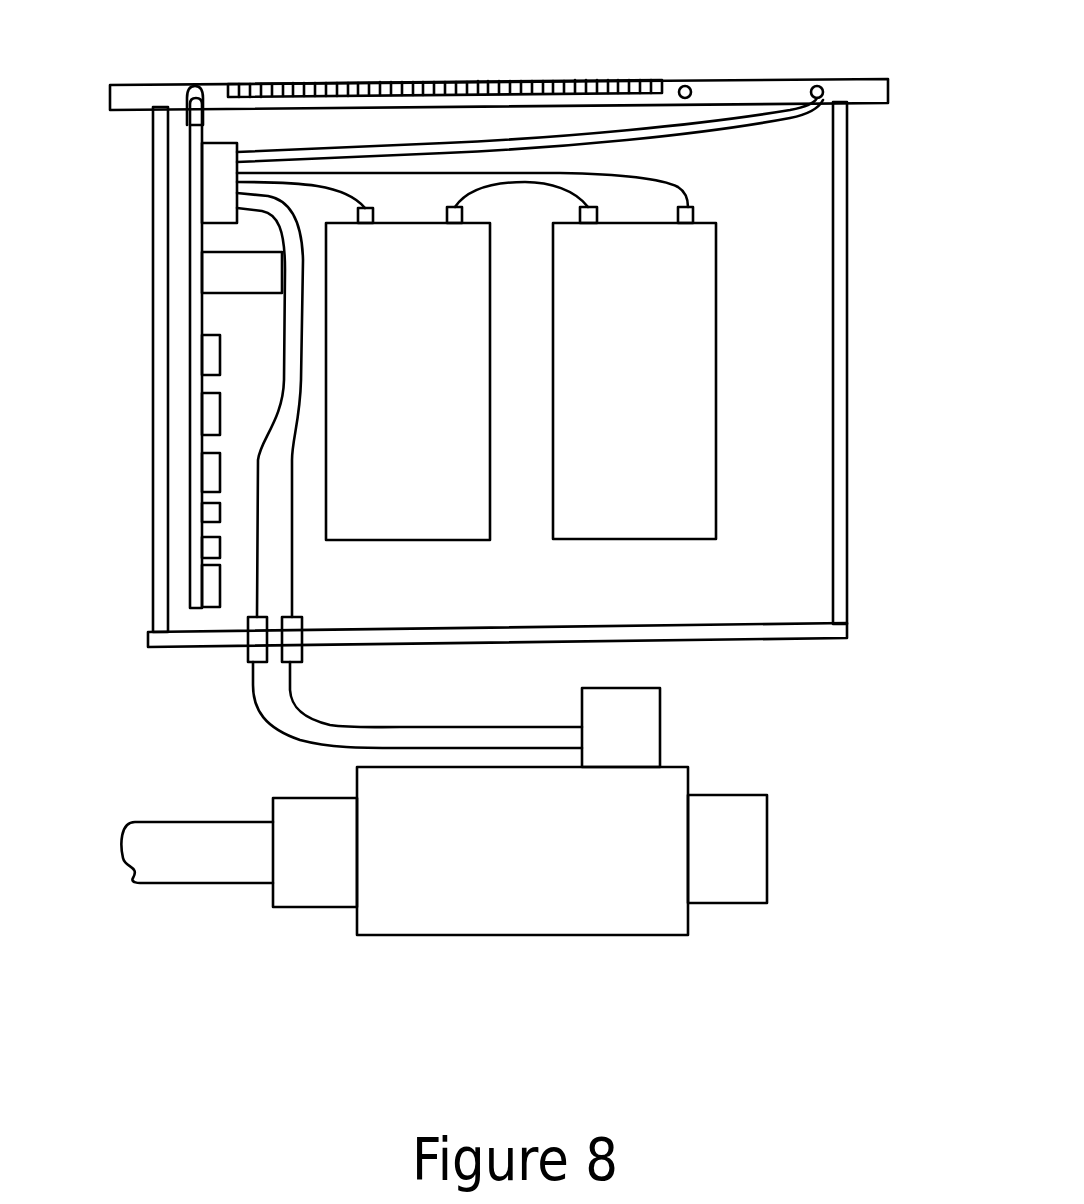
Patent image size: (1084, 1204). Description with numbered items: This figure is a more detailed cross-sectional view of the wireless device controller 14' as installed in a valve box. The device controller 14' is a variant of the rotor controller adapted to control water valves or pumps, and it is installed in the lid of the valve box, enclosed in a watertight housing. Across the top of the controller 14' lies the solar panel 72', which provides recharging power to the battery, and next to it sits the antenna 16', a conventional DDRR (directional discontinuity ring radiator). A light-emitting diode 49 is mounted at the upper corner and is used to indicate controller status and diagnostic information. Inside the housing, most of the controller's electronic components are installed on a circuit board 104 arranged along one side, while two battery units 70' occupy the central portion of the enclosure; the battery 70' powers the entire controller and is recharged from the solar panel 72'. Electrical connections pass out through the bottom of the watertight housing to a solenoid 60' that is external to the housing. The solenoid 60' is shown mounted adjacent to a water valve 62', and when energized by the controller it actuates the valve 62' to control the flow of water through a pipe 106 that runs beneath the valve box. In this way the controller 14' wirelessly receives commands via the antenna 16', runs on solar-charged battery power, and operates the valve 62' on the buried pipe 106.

The device controller 14' is at (525, 363).
The antenna 16' is at (530, 95).
The light-emitting diode (LED) 49 is at (195, 83).
The solar panel 72' is at (445, 60).
The circuit board 104 is at (192, 313).
The battery 70' is at (531, 406).
The solenoid 60' is at (681, 727).
The water valve 62' is at (520, 899).
The pipe 106 is at (175, 883).